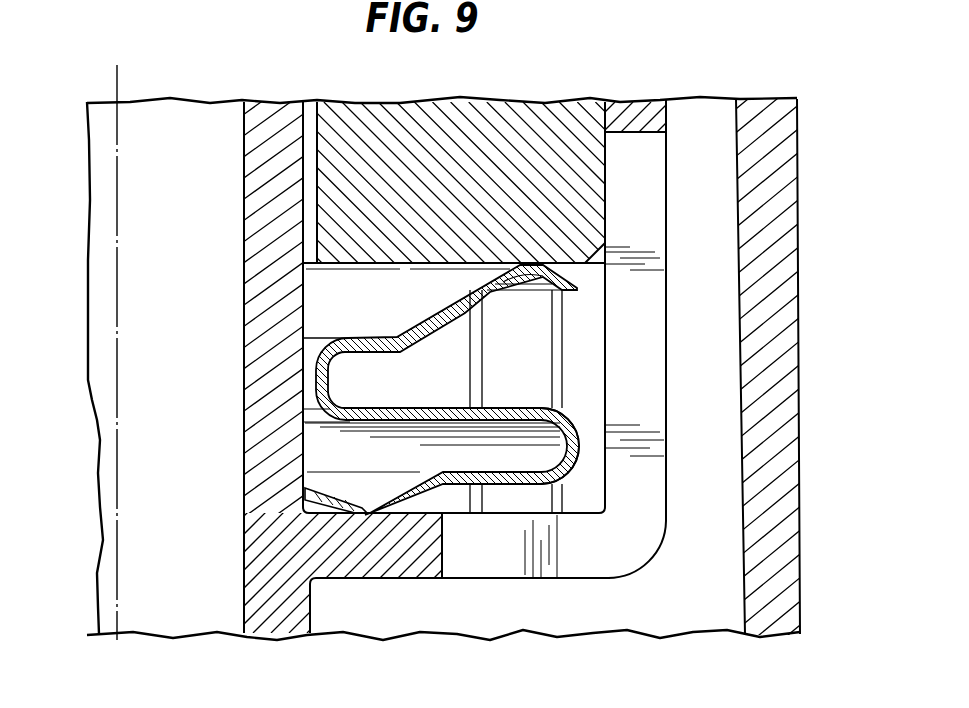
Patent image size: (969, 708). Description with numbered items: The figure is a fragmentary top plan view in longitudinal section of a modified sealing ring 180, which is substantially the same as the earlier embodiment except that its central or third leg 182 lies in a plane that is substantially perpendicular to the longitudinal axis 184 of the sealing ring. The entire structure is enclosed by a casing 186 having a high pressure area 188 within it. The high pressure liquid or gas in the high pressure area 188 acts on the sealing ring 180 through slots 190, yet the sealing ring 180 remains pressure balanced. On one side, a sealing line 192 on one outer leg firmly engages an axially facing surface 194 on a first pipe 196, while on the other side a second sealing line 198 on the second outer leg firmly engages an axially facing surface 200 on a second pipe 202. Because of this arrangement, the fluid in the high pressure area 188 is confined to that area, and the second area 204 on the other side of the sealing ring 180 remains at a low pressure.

The sealing ring 180 is at (593, 434).
The central or third leg 182 is at (527, 407).
The longitudinal axis 184 is at (117, 90).
The casing 186 is at (804, 257).
The high pressure area 188 is at (681, 596).
The slots 190 is at (645, 228).
The sealing line 192 is at (536, 262).
The axially facing surface 194 is at (364, 266).
The first pipe 196 is at (478, 92).
The second sealing line 198 is at (368, 515).
The axially facing surface 200 is at (458, 513).
The second pipe 202 is at (279, 92).
The second area 204 is at (298, 232).